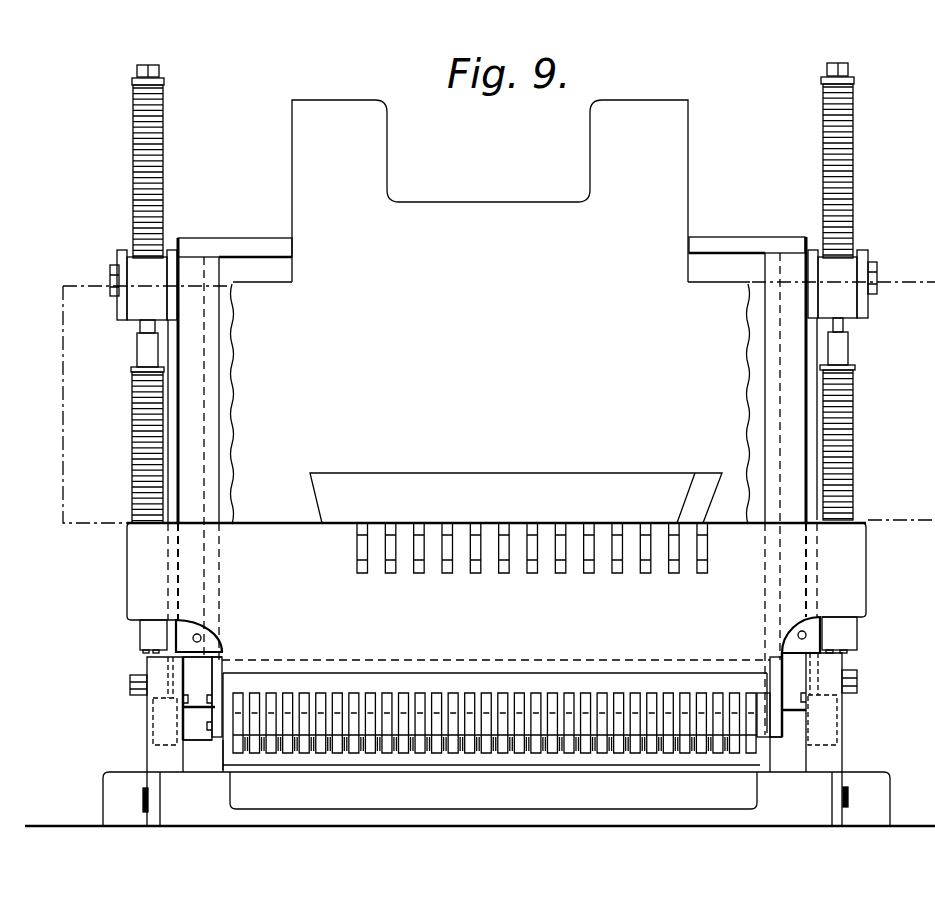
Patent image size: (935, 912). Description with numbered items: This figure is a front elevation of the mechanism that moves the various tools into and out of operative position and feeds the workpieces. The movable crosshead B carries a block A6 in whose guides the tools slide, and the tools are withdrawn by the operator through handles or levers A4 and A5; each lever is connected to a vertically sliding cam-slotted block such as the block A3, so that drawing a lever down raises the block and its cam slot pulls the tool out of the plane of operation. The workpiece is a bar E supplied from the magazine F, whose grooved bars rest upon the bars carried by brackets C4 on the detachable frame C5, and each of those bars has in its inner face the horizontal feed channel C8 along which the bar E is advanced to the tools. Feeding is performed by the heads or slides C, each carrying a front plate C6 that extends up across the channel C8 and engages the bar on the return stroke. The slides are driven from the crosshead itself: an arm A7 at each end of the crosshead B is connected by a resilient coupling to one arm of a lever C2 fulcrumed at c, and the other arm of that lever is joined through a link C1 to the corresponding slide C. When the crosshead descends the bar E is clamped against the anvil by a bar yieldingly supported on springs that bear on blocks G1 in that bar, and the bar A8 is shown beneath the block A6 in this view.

The movable crosshead B is at (491, 312).
The fulcrum c is at (178, 290).
The magazine F is at (213, 424).
The link C1 is at (133, 398).
The lever C2 is at (175, 485).
The block A6 is at (496, 571).
The wedge block A8 is at (516, 498).
The lever A4 is at (503, 550).
The blocks G1 is at (190, 640).
The arm A7 is at (138, 635).
The feeding slide C is at (192, 727).
The front plate C6 is at (217, 692).
The feed channel C8 is at (223, 660).
The workpiece E is at (414, 660).
The lever A5 is at (508, 718).
The detachable frame C5 is at (545, 723).
The cam-slotted block A3 is at (425, 753).
The bracket C4 is at (157, 758).